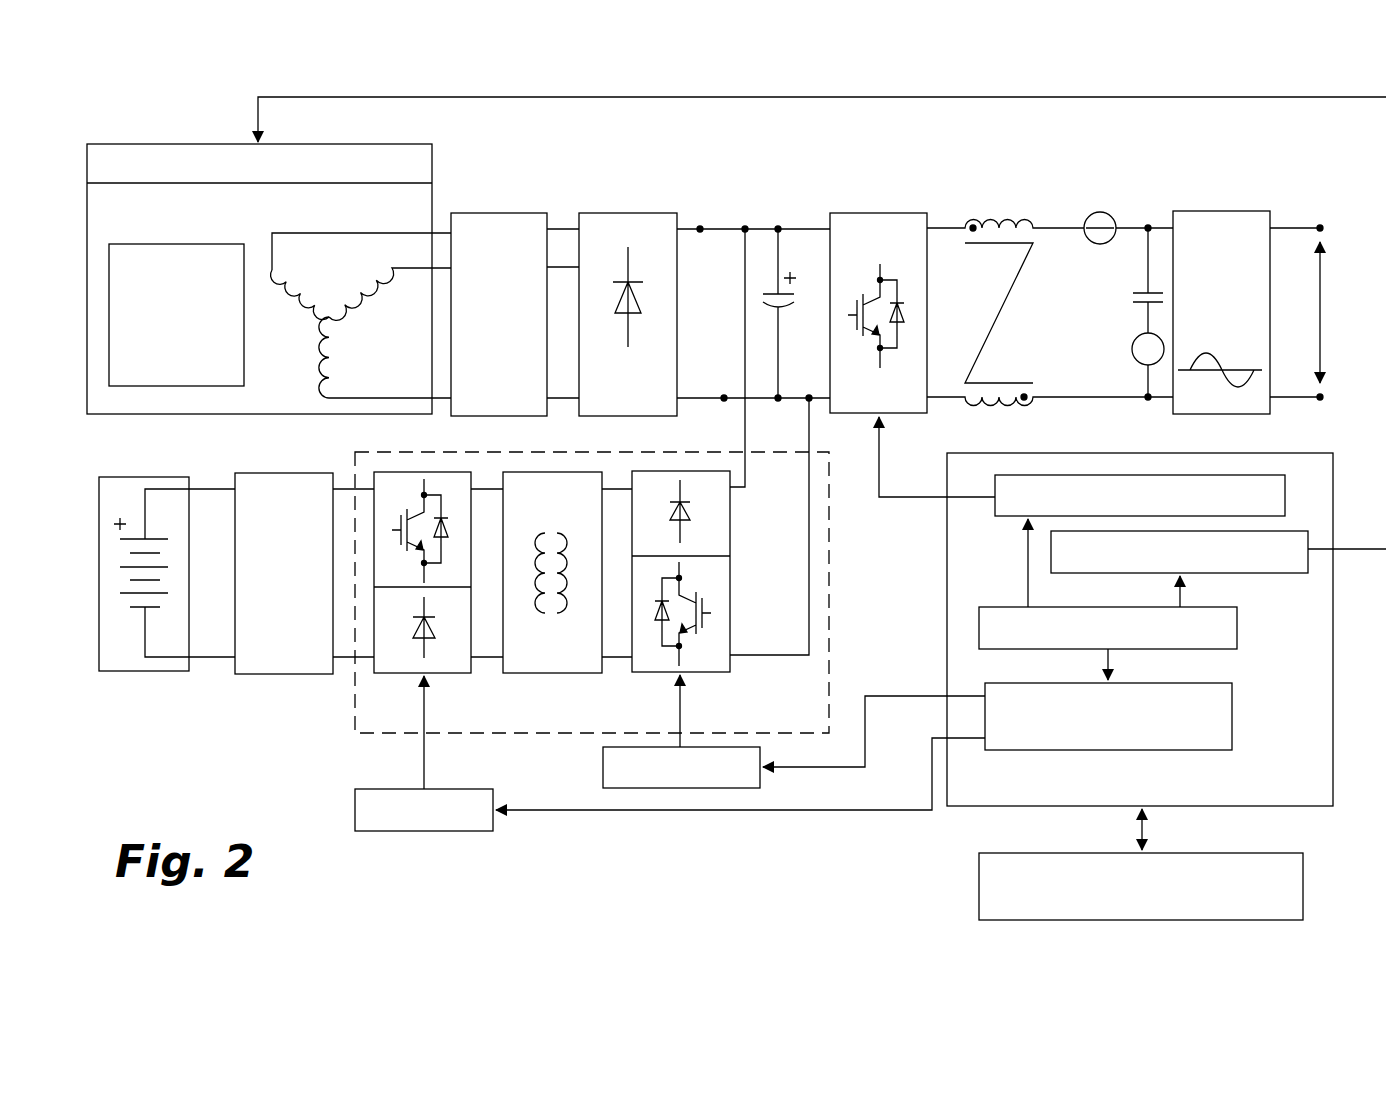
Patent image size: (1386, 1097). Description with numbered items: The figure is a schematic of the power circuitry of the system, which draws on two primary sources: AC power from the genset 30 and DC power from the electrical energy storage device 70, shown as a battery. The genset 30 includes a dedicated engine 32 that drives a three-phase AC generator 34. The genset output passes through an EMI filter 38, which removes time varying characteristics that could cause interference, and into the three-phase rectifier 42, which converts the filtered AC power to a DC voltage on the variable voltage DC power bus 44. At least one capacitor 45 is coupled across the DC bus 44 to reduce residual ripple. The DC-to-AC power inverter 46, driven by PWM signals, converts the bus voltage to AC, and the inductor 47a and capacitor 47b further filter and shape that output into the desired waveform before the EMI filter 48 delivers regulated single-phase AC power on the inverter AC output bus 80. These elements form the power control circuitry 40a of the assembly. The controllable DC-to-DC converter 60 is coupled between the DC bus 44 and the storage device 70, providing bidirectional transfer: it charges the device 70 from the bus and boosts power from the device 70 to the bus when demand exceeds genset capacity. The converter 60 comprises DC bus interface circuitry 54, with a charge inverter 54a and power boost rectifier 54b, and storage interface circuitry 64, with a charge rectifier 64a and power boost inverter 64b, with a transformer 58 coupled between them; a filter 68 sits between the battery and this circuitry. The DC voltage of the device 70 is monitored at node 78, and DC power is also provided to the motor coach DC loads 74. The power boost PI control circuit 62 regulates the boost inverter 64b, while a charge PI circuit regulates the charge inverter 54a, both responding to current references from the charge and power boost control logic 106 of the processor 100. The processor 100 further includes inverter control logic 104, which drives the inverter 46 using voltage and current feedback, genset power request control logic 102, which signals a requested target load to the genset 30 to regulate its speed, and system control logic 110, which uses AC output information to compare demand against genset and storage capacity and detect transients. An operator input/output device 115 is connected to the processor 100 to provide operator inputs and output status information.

The genset 30 is at (305, 180).
The engine 32 is at (166, 348).
The three-phase AC generator 34 is at (428, 222).
The EMI filter 38 is at (497, 212).
The power control circuitry 40a is at (1264, 147).
The three-phase rectifier 42 is at (622, 212).
The variable voltage DC power bus 44 is at (731, 222).
The capacitor 45 is at (773, 292).
The DC-to-AC power inverter 46 is at (885, 212).
The inductor 47a is at (1005, 222).
The capacitor 47b is at (1143, 272).
The EMI filter 48 is at (1195, 211).
The inverter AC output bus 80 is at (1295, 226).
The DC bus interface circuitry 54 is at (713, 571).
The charge inverter 54a is at (728, 582).
The power boost rectifier 54b is at (728, 499).
The transformer 58 is at (545, 674).
The controllable DC-to-DC converter 60 is at (754, 732).
The power boost PI control circuit 62 is at (603, 777).
The storage interface circuitry 64 is at (422, 575).
The charge rectifier 64a is at (380, 612).
The power boost inverter 64b is at (380, 502).
The battery EMI filter 68 is at (283, 675).
The electrical energy storage device 70 is at (99, 563).
The motor coach DC loads 74 is at (114, 608).
The node 78 is at (200, 490).
The processor 100 is at (1210, 791).
The genset power request control logic 102 is at (1288, 574).
The inverter control logic 104 is at (1286, 492).
The charge and power boost control logic 106 is at (1233, 727).
The system control logic 110 is at (1215, 649).
The operator input/output device 115 is at (1303, 887).